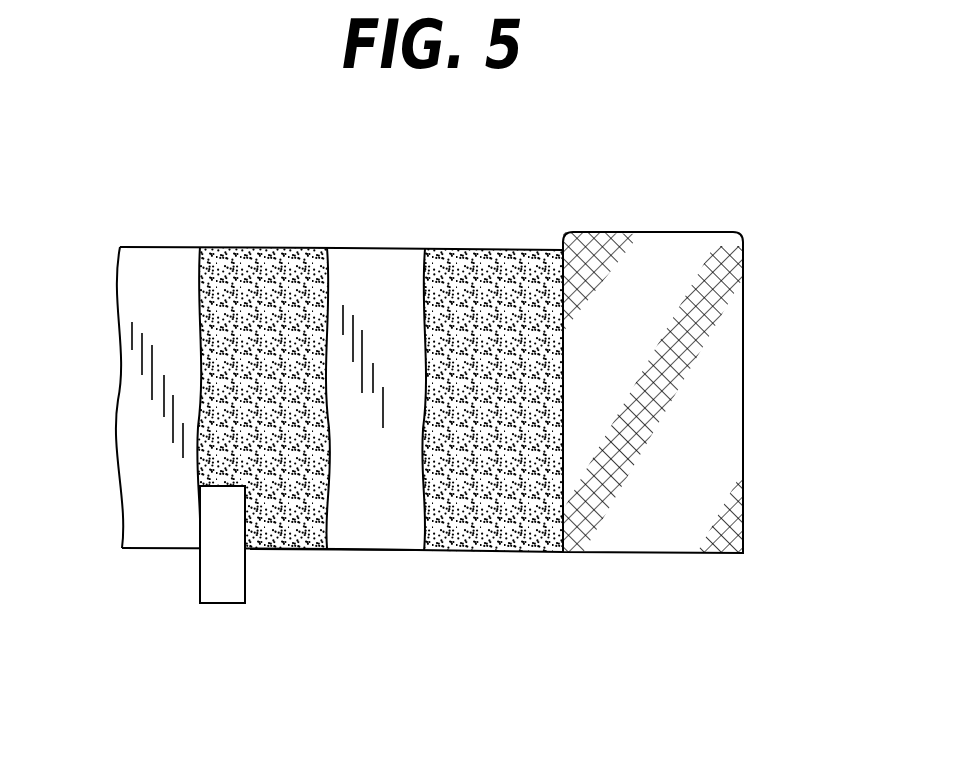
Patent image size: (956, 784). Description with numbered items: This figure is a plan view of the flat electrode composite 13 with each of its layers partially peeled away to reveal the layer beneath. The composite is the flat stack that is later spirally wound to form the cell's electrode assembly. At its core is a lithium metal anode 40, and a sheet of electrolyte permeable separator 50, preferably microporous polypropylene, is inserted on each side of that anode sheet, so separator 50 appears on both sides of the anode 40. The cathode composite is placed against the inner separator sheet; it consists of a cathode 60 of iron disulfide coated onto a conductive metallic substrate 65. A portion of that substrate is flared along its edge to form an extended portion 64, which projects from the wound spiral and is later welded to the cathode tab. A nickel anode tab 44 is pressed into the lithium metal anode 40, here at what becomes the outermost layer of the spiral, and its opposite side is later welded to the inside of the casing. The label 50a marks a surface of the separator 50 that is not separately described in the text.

The flat electrode composite 13 is at (194, 146).
The anode 40 is at (262, 262).
The anode tab 44 is at (230, 605).
The separator 50 is at (137, 260).
The substrate bottom surface 50a is at (372, 548).
The cathode 60 is at (487, 265).
The extended portion 64 is at (710, 232).
The metallic substrate 65 is at (672, 533).